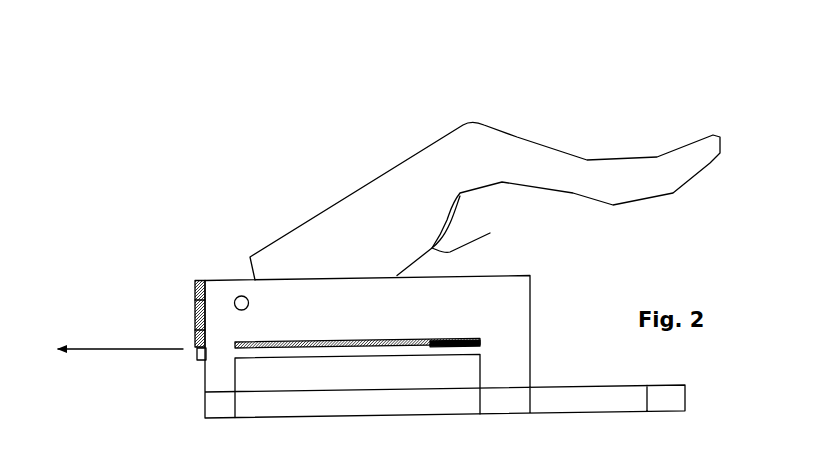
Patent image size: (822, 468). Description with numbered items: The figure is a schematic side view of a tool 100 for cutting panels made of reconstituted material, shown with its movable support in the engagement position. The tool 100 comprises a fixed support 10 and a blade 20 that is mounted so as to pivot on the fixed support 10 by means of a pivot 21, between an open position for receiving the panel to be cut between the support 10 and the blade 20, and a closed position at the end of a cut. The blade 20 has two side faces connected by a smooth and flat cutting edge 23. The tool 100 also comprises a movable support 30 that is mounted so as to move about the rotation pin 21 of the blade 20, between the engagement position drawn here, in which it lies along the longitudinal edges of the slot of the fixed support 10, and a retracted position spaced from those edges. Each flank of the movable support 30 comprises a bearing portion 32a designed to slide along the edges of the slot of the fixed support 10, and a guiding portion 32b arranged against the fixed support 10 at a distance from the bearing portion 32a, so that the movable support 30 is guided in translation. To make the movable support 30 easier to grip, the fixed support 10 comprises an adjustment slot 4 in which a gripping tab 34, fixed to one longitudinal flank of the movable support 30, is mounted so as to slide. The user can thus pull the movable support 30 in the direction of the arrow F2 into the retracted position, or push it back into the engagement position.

The fixed support 10 is at (497, 295).
The adjustment slot 4 is at (318, 348).
The gripping tab 34 is at (452, 347).
The movable support 30 is at (190, 302).
The bearing portion 32a is at (203, 317).
The guiding portion 32b is at (197, 355).
The arrow F2 is at (123, 350).
The pivot 21 is at (242, 292).
The blade 20 is at (447, 165).
The cutting edge 23 is at (490, 233).
The tool 100 is at (485, 151).